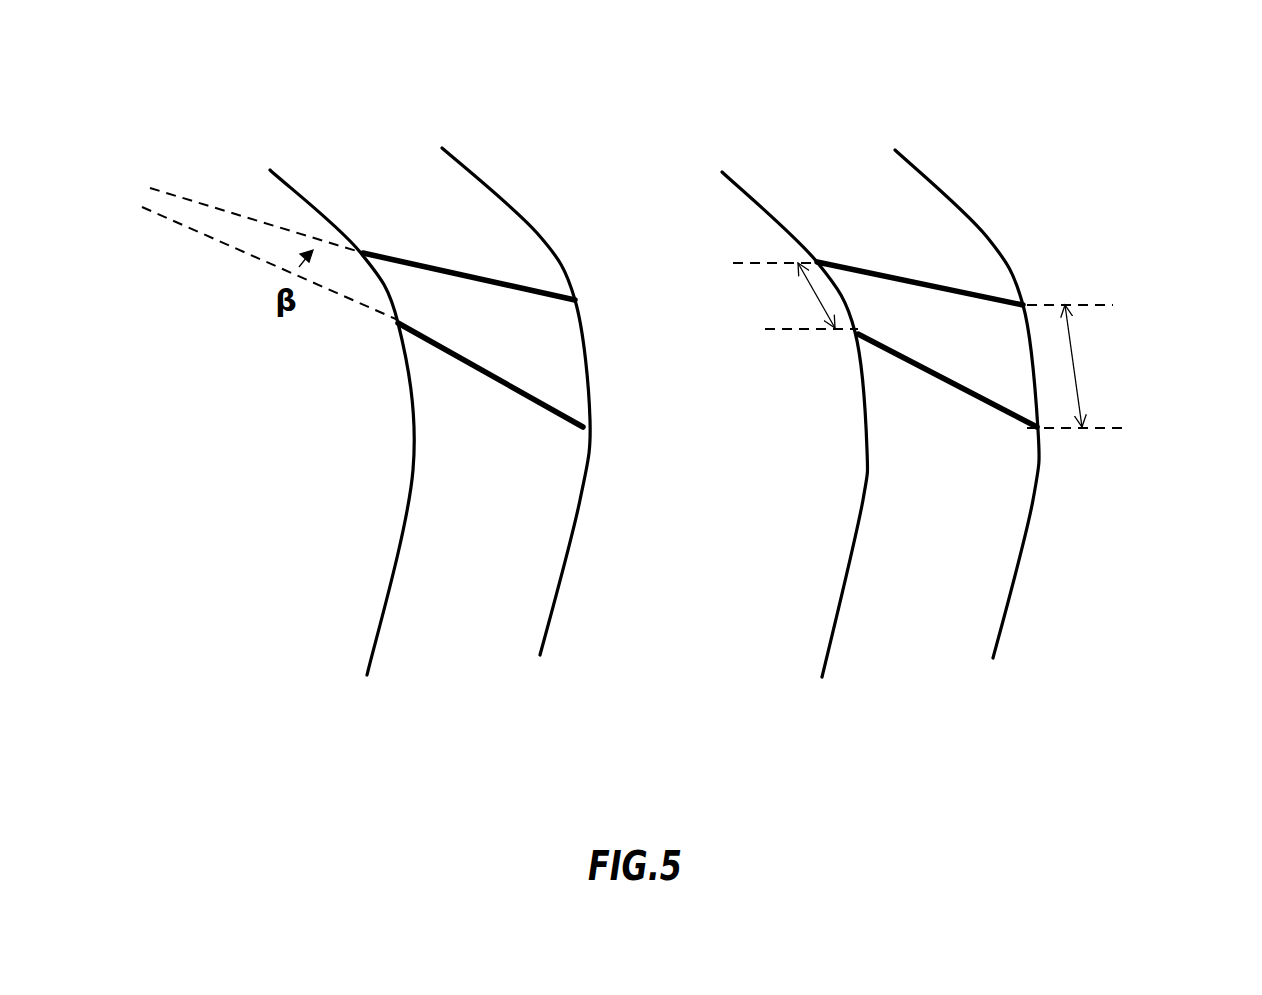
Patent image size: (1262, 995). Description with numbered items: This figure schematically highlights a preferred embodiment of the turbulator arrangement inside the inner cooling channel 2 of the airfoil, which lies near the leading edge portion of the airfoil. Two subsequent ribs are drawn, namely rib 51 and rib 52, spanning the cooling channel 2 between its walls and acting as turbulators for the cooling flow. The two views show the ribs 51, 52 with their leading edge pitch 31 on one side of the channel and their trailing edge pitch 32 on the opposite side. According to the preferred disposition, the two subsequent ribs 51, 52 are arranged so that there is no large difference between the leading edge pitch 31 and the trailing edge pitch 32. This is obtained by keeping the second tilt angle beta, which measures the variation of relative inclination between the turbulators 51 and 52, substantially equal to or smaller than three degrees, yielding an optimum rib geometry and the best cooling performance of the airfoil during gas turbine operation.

The inner cooling channel 2 is at (399, 198).
The rib 51 is at (510, 285).
The rib 52 is at (488, 377).
The leading edge pitch 31 is at (800, 305).
The trailing edge pitch 32 is at (1080, 362).